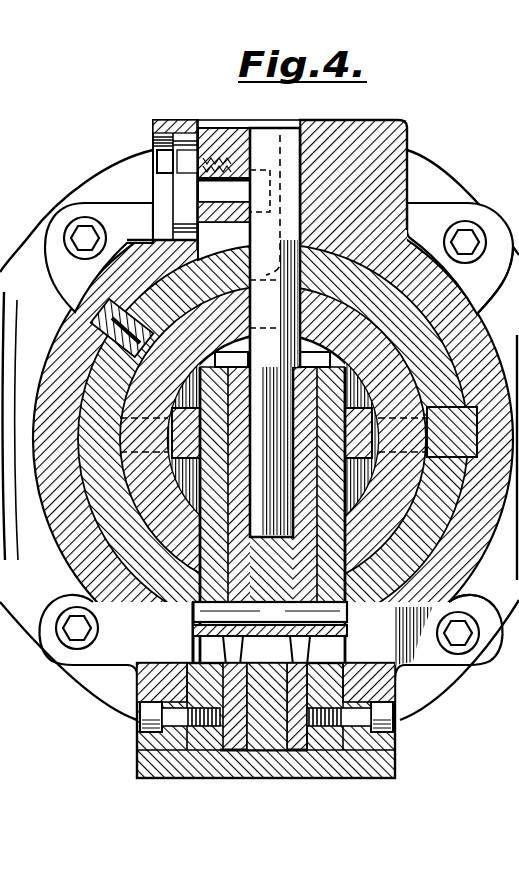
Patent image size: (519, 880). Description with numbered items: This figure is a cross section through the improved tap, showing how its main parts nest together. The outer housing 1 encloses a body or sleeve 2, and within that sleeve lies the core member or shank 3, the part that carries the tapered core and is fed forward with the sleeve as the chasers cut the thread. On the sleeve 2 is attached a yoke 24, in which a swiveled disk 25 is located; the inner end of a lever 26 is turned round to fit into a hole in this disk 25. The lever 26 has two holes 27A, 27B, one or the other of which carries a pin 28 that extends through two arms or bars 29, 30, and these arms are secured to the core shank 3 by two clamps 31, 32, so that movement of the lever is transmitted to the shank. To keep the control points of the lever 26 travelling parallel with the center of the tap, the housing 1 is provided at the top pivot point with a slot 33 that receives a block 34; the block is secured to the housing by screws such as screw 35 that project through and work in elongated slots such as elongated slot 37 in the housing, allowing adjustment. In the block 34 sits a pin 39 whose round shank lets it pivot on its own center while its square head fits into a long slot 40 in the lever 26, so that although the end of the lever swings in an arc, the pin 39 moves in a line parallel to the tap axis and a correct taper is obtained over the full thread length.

The housing 1 is at (398, 121).
The body or sleeve 2 is at (98, 572).
The core member or shank 3 is at (190, 387).
The yoke 24 is at (240, 780).
The swiveled disk 25 is at (167, 780).
The lever 26 is at (303, 167).
The hole 27A is at (355, 654).
The hole 27B is at (190, 603).
The pin 28 is at (344, 606).
The arm or bar 29 is at (215, 492).
The arm or bar 30 is at (463, 323).
The clamp 31 is at (452, 606).
The clamp 32 is at (112, 492).
The slot 33 is at (247, 121).
The block 34 is at (217, 130).
The screw 35 is at (163, 162).
The elongated slot 37 is at (180, 136).
The pin 39 is at (224, 200).
The long slot 40 is at (284, 229).